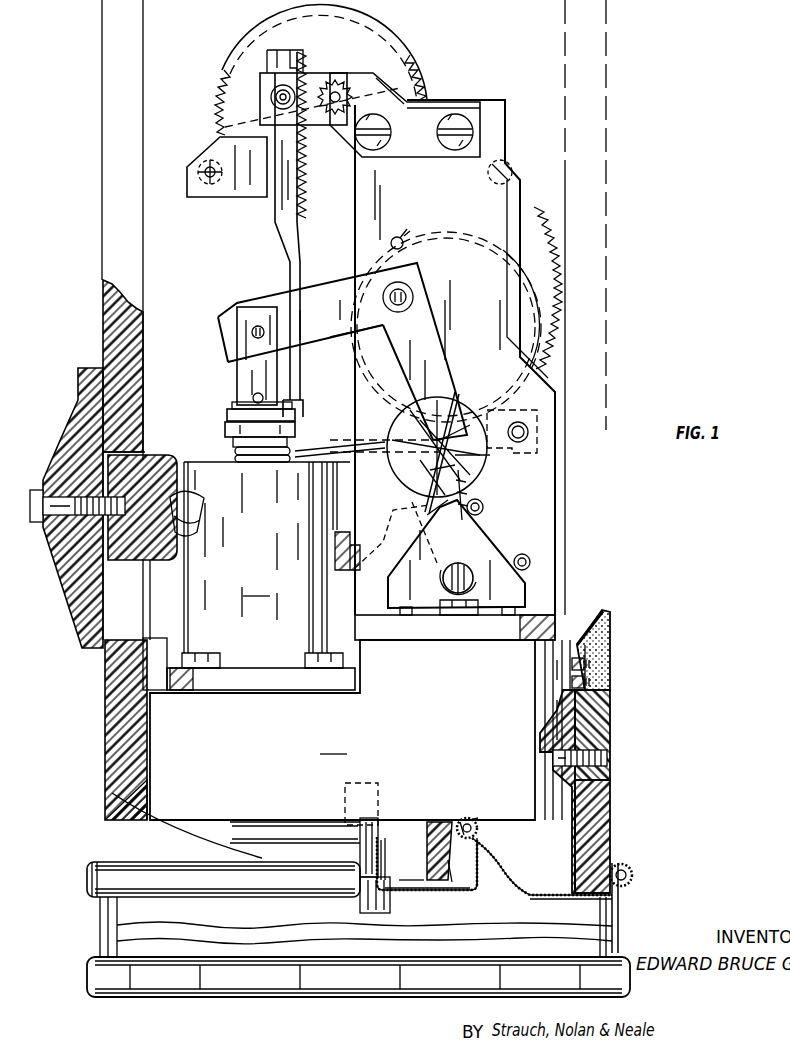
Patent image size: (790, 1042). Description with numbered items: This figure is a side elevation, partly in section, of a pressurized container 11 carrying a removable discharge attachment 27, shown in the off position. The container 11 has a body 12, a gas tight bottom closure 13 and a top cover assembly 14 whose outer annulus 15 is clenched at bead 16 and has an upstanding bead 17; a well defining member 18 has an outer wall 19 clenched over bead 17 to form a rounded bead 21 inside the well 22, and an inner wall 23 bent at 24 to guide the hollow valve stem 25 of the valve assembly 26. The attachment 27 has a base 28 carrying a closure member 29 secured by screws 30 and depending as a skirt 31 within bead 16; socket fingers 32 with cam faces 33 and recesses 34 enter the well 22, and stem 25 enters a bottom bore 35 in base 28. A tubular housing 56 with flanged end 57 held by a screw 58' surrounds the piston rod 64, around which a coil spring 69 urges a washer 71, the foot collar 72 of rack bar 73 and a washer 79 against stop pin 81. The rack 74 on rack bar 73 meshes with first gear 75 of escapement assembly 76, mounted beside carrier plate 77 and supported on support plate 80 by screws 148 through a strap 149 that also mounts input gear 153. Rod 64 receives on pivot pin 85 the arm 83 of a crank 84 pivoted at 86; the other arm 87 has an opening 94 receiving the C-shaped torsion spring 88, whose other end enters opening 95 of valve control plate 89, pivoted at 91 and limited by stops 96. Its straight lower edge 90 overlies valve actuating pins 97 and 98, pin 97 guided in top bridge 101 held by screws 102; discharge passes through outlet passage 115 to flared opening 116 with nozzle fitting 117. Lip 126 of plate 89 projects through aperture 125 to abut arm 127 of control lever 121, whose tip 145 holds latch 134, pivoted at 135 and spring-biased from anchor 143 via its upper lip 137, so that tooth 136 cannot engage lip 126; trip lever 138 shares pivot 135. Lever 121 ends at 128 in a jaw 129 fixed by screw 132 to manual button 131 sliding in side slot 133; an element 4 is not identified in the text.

The input gear 153 is at (300, 42).
The toothed rack 74 is at (296, 70).
The first gear 75 is at (343, 80).
The escapement assembly 76 is at (442, 86).
The support plate 80 is at (497, 107).
The carrier plate 77 is at (517, 182).
The screws 148 is at (447, 148).
The strap 149 is at (470, 150).
The spring anchor 143 is at (400, 237).
The rack bar 73 is at (287, 250).
The rod 64 is at (253, 313).
The pivot pin 85 is at (265, 332).
The crank 84 is at (432, 286).
The crank pivot 86 is at (384, 296).
The crank arm 87 is at (438, 351).
The crank arm 83 is at (364, 324).
The upper lip 137 is at (402, 397).
The stop pin 81 is at (263, 394).
The torsion spring 88 is at (460, 404).
The opening 94 is at (465, 427).
The pivot 135 is at (530, 426).
The nylon washer 79 is at (230, 403).
The foot collar 72 is at (227, 415).
The nylon washer 71 is at (225, 428).
The coil spring 69 is at (235, 452).
The jaw 129 is at (169, 472).
The trip lever 138 is at (328, 447).
The tip 145 is at (405, 443).
The tooth edge 136 is at (398, 462).
The lip 126 is at (427, 477).
The cam 4 is at (486, 462).
The aperture 125 is at (490, 460).
The opening 95 is at (462, 495).
The rigid stops 96 is at (485, 507).
The arm 127 is at (412, 502).
The control lever 121 is at (350, 538).
The latch element 134 is at (450, 500).
The valve control plate 89 is at (465, 533).
The pivot 91 is at (478, 555).
The lever end 128 is at (192, 513).
The screw 132 is at (37, 528).
The manual control button 131 is at (83, 563).
The side slot 133 is at (127, 645).
The tubular housing 56 is at (267, 557).
The screw 58' is at (262, 643).
The flanged lower end 57 is at (236, 680).
The valve actuating pin 97 is at (405, 616).
The top bridge 101 is at (373, 630).
The screws 102 is at (453, 616).
The straight edge 90 is at (487, 616).
The valve actuating pin 98 is at (511, 616).
The discharge outlet passage 115 is at (563, 675).
The discharge opening 116 is at (620, 643).
The nozzle fitting 117 is at (583, 682).
The attachment 27 is at (618, 721).
The screws 30 is at (608, 755).
The closure member 29 is at (598, 802).
The skirt 31 is at (608, 828).
The bead 16 is at (631, 872).
The top cover assembly 14 is at (520, 866).
The outer annulus 15 is at (519, 892).
The body 12 is at (619, 917).
The pressurized container 11 is at (625, 946).
The bottom closure 13 is at (385, 980).
The bottom bore 35 is at (378, 792).
The valve stem 25 is at (368, 830).
The socket fingers 32 is at (434, 838).
The recess 34 is at (462, 820).
The annular bead 21 is at (472, 819).
The annular bead 17 is at (478, 828).
The reversely bent portion 24 is at (387, 853).
The upright wall 23 is at (393, 860).
The well 22 is at (427, 863).
The cam face 33 is at (455, 855).
The valve assembly 26 is at (390, 902).
The well defining member 18 is at (437, 893).
The outer upright wall 19 is at (478, 872).
The cylindrical base 28 is at (347, 730).